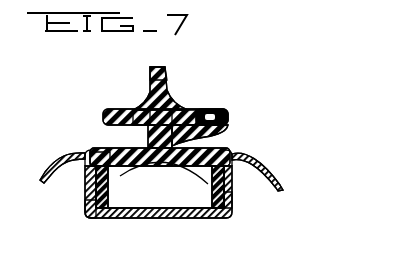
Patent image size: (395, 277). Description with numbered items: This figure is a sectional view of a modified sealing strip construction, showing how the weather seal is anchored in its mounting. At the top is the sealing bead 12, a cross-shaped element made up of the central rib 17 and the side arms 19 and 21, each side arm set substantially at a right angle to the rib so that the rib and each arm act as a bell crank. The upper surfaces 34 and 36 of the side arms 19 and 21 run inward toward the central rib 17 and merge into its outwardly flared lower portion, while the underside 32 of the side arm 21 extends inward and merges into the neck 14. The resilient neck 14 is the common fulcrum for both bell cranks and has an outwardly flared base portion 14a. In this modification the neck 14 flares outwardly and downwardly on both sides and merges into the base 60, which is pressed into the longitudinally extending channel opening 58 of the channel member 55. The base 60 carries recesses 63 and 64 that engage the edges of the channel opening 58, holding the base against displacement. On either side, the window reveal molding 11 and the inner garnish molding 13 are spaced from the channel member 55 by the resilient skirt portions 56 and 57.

The window reveal molding 11 is at (57, 160).
The sealing bead 12 is at (181, 89).
The inner garnish molding 13 is at (270, 167).
The neck 14 is at (150, 127).
The outwardly flared base portion 14a is at (75, 144).
The central rib 17 is at (158, 70).
The side arm 19 is at (103, 112).
The side arm 21 is at (213, 116).
The underside of side arm 32 is at (205, 135).
The upper surface of side arm 34 is at (133, 109).
The upper surface of side arm 36 is at (178, 108).
The channel member 55 is at (196, 218).
The resilient skirt portion 56 is at (228, 218).
The resilient skirt portion 57 is at (90, 212).
The channel opening 58 is at (172, 136).
The base 60 is at (160, 170).
The recess 63 is at (100, 212).
The recess 64 is at (234, 193).